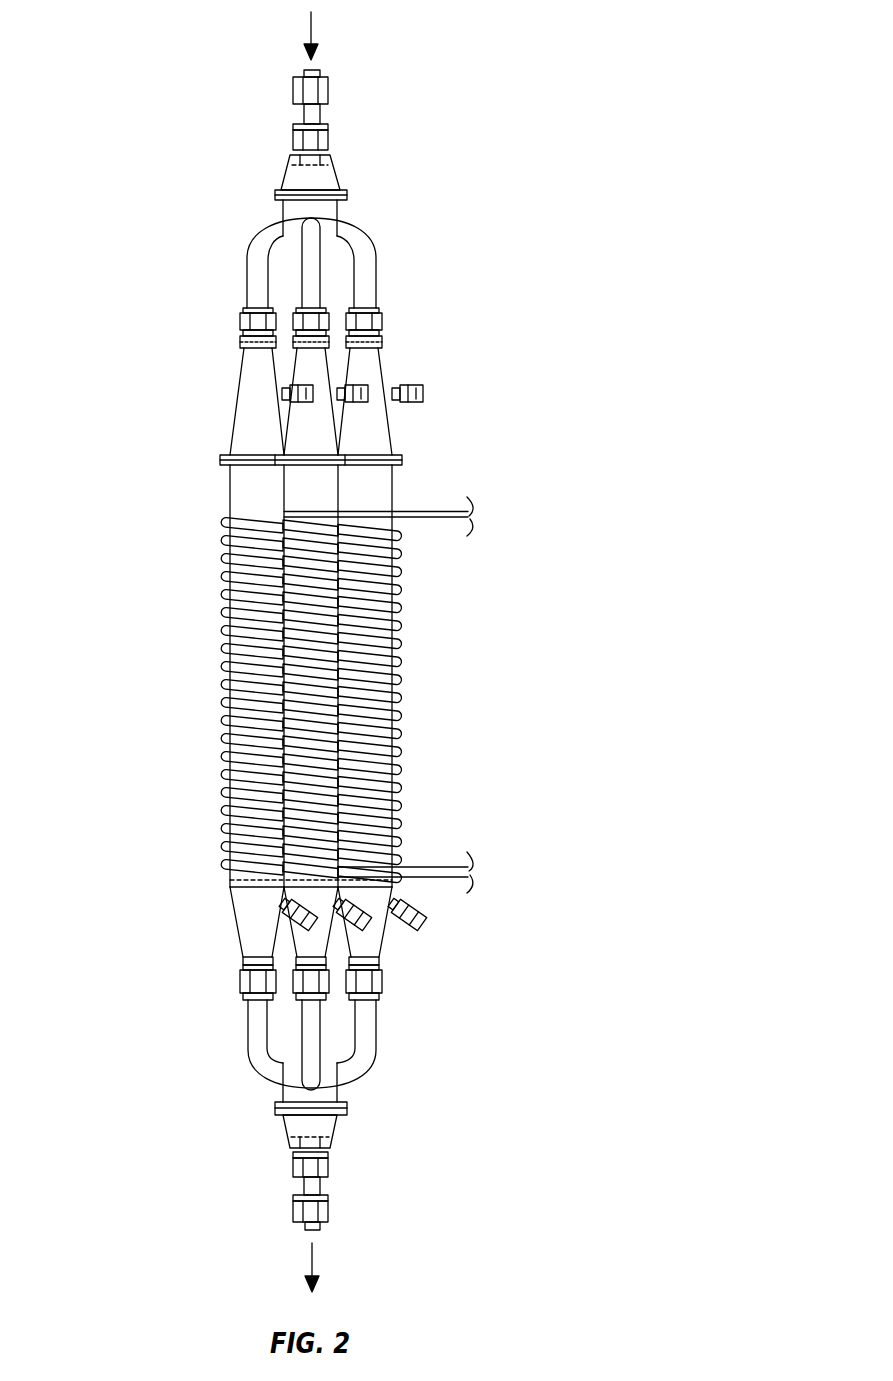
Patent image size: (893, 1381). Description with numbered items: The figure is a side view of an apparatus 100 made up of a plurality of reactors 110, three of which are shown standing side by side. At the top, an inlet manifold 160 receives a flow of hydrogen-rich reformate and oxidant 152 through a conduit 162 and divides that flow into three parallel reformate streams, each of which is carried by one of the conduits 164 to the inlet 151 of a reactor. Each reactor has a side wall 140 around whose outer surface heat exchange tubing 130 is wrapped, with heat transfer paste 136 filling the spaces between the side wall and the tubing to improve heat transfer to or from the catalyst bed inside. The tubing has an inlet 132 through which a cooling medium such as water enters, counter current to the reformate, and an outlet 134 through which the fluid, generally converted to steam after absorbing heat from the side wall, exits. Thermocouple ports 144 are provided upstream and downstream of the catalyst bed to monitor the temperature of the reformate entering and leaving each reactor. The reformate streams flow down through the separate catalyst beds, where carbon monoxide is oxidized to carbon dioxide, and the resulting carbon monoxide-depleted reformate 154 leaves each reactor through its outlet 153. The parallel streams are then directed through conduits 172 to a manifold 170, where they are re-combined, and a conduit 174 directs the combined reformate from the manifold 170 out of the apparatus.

The apparatus 100 is at (130, 300).
The reactors 110 is at (375, 486).
The heat exchange tubing 130 is at (405, 638).
The inlet 132 is at (452, 866).
The outlet 134 is at (449, 522).
The heat transfer paste 136 is at (378, 645).
The side wall 140 is at (395, 447).
The thermocouple ports 144 is at (424, 393).
The inlet 151 is at (381, 304).
The hydrogen-rich reformate and oxidant 152 is at (313, 33).
The outlet 153 is at (243, 985).
The carbon monoxide-depleted reformate 154 is at (313, 1263).
The inlet manifold 160 is at (327, 181).
The conduit 162 is at (330, 95).
The conduits 164 is at (257, 262).
The manifold 170 is at (332, 1125).
The conduits 172 is at (255, 1040).
The conduit 174 is at (323, 1188).